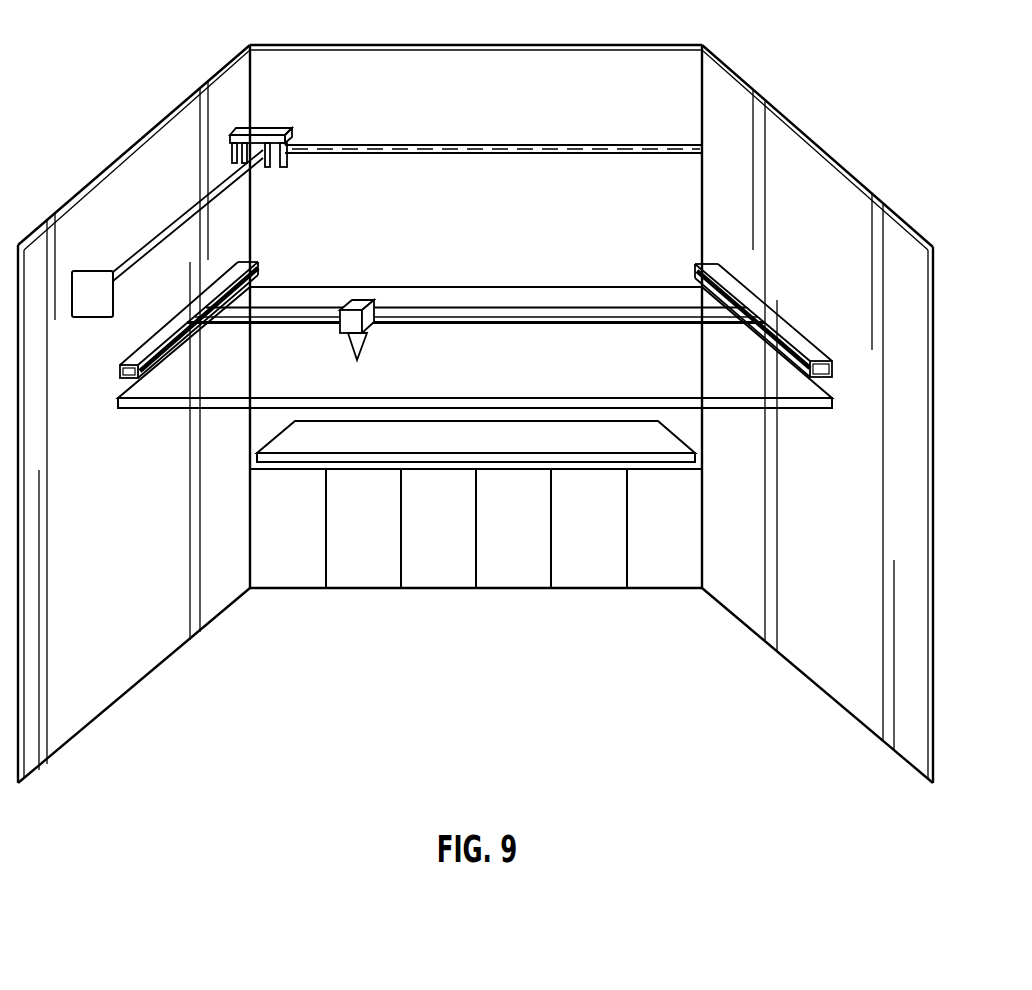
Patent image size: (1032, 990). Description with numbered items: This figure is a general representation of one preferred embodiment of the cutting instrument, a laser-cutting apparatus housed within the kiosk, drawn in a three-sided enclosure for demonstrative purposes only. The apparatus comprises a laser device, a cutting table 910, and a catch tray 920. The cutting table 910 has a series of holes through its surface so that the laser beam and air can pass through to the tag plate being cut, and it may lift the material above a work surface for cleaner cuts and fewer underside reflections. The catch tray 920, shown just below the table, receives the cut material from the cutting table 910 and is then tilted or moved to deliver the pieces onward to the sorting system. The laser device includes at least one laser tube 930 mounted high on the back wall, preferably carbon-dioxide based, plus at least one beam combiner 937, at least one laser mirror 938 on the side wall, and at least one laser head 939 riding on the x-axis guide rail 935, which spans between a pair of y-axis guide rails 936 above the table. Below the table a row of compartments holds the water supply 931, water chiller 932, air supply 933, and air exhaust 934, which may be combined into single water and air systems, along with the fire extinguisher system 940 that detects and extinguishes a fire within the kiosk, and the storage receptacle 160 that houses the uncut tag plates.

The cutting table 910 is at (790, 393).
The catch tray 920 is at (393, 432).
The laser tube 930 is at (603, 146).
The water supply 931 is at (289, 566).
The water chiller 932 is at (367, 566).
The air supply 933 is at (446, 566).
The air exhaust 934 is at (523, 566).
The x-axis guide rail 935 is at (502, 313).
The y-axis guide rail 936 is at (176, 330).
The beam combiner 937 is at (265, 132).
The laser mirror 938 is at (85, 278).
The laser head 939 is at (350, 340).
The fire extinguisher system 940 is at (601, 566).
The storage receptacle 160 is at (680, 566).